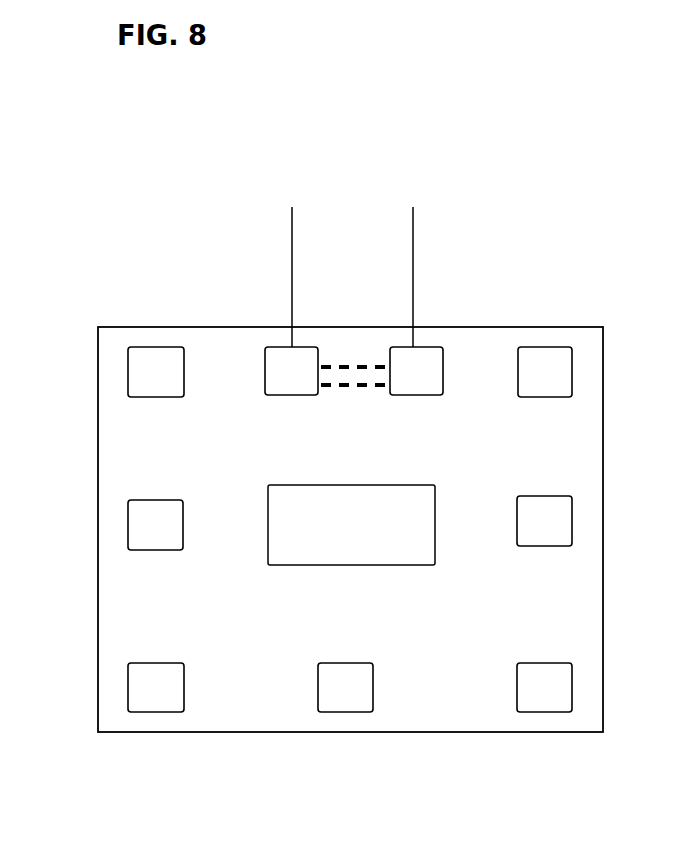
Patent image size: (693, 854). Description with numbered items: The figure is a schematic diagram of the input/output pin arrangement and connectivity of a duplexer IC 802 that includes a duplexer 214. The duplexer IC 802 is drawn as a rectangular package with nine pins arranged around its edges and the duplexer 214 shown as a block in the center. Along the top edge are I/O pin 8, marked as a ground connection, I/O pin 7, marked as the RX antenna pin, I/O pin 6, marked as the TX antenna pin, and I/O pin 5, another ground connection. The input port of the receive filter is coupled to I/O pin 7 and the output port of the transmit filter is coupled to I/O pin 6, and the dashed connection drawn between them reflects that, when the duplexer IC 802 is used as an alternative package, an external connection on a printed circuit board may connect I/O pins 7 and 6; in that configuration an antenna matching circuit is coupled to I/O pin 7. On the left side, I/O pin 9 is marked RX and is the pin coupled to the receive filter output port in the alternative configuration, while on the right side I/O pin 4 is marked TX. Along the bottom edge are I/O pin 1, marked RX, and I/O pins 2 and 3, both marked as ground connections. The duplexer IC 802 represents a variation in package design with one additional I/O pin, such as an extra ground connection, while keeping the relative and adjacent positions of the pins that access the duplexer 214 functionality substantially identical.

The duplexer IC 802 is at (555, 163).
The duplexer 214 is at (330, 592).
The I/O pin 1 is at (153, 747).
The I/O pin 2 is at (345, 745).
The I/O pin 3 is at (549, 745).
The I/O pin 4 is at (585, 511).
The I/O pin 5 is at (545, 321).
The I/O pin 6 is at (430, 301).
The I/O pin 7 is at (274, 301).
The I/O pin 8 is at (156, 321).
The I/O pin 9 is at (108, 529).